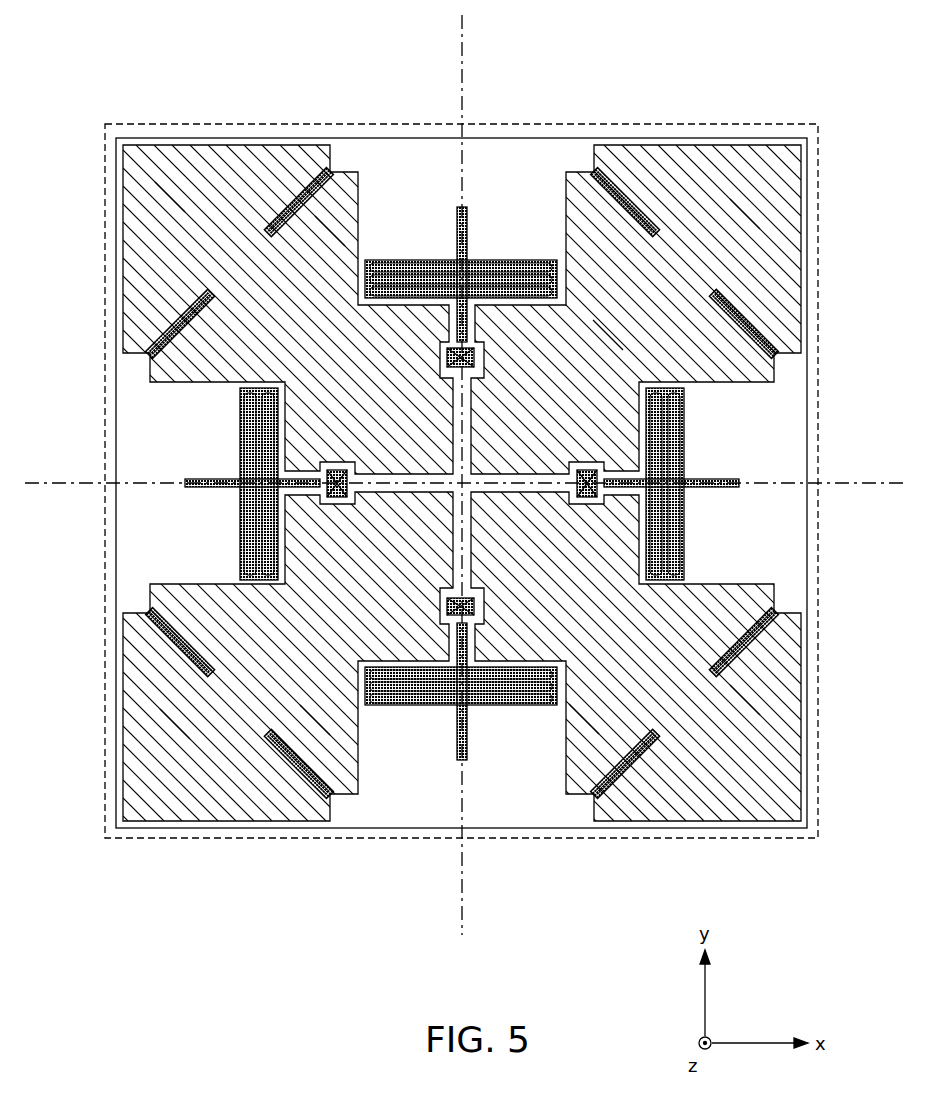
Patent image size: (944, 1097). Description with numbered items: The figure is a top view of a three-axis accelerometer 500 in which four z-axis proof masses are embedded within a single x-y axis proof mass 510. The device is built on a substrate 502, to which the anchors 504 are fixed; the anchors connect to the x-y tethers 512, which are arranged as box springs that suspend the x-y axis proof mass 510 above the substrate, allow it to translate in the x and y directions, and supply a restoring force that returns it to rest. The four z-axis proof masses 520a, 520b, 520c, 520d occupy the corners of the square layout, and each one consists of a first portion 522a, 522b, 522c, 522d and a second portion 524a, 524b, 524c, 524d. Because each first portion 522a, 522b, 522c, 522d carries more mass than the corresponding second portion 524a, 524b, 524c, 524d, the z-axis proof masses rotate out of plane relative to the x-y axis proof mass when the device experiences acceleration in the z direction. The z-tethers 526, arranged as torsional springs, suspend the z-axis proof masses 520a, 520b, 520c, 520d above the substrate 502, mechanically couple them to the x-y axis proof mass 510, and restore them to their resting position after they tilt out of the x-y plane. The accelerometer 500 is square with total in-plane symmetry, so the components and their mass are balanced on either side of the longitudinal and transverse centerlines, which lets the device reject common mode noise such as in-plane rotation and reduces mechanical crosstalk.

The three-axis accelerometer 500 is at (131, 68).
The substrate 502 is at (775, 125).
The anchors 504 is at (455, 345).
The x-y axis proof mass 510 is at (503, 155).
The x-y tethers 512 is at (466, 270).
The z-axis proof mass 520a is at (669, 170).
The z-axis proof mass 520b is at (684, 770).
The z-axis proof mass 520c is at (216, 759).
The z-axis proof mass 520d is at (245, 176).
The first portion 522a is at (605, 340).
The first portion 522b is at (577, 720).
The first portion 522c is at (313, 718).
The first portion 522d is at (325, 235).
The second portion 524a is at (745, 225).
The second portion 524b is at (745, 710).
The second portion 524c is at (175, 720).
The second portion 524d is at (170, 200).
The z-tethers 526 is at (185, 318).